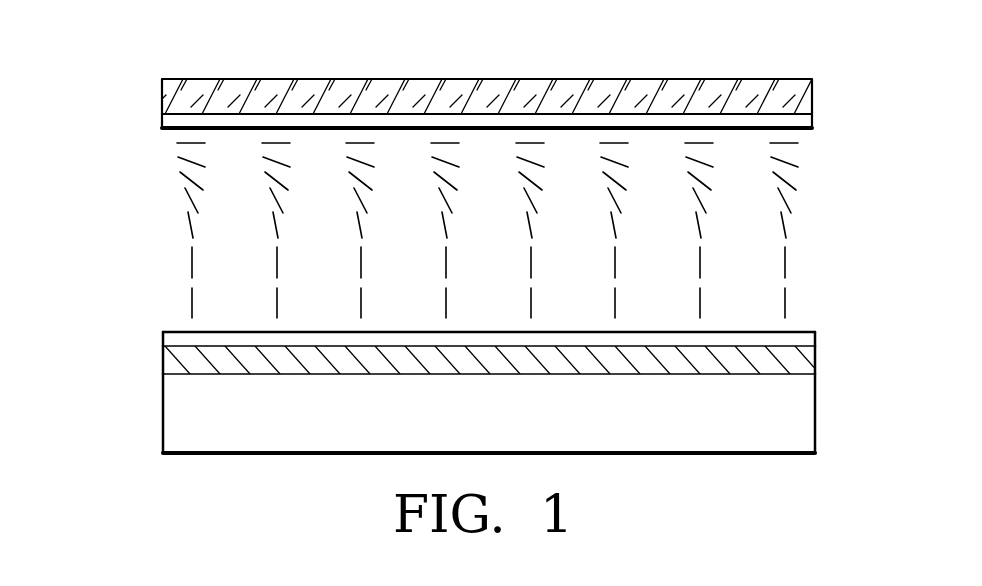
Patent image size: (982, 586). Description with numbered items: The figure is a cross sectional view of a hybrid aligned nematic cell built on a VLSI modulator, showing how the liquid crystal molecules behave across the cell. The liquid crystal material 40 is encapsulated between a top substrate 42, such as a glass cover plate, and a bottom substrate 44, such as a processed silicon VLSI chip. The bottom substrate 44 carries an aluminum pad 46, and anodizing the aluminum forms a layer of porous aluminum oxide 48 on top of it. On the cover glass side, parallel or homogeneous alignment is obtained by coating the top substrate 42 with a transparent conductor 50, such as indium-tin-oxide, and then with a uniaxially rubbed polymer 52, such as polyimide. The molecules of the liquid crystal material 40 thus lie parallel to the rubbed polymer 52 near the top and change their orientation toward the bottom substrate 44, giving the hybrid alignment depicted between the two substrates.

The liquid crystal material 40 is at (160, 240).
The top substrate 42 is at (783, 87).
The bottom substrate 44 is at (797, 411).
The aluminum pad 46 is at (793, 357).
The layer of porous aluminum oxide 48 is at (802, 337).
The transparent conductor 50 is at (807, 120).
The uniaxially rubbed polymer 52 is at (168, 131).